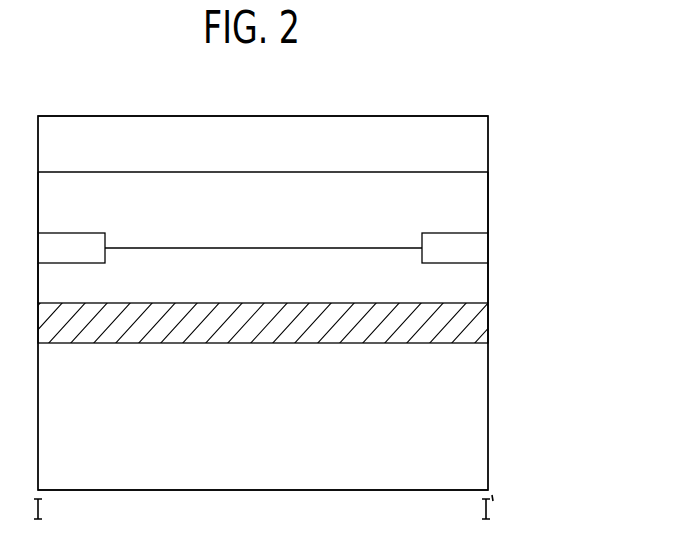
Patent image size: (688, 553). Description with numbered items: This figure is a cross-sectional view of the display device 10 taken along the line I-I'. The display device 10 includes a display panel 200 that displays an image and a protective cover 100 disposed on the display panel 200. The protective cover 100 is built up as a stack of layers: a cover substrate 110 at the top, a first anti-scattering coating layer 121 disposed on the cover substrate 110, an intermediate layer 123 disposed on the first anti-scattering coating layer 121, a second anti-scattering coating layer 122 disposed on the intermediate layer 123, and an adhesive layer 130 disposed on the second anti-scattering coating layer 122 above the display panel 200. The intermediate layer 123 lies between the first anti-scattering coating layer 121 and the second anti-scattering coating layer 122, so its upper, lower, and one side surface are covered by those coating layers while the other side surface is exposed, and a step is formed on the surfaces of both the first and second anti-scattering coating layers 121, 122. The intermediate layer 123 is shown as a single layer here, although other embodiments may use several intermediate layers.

The display device 10 is at (501, 72).
The protective cover 100 is at (558, 124).
The cover substrate 110 is at (485, 146).
The first anti-scattering coating layer 121 is at (485, 207).
The second anti-scattering coating layer 122 is at (485, 284).
The intermediate layer 123 is at (485, 249).
The adhesive layer 130 is at (485, 323).
The display panel 200 is at (485, 416).